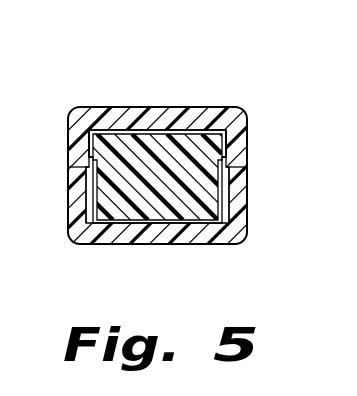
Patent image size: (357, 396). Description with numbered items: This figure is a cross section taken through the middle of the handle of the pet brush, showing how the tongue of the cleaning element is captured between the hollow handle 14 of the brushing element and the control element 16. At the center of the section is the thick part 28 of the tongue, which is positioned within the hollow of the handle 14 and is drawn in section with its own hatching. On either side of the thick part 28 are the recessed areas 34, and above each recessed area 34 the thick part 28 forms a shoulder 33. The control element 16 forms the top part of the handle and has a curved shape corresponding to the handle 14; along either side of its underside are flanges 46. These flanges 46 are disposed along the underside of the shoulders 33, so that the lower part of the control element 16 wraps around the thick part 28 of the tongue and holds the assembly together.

The handle 14 is at (243, 228).
The control element 16 is at (174, 107).
The thick part 28 is at (141, 160).
The shoulders 33 is at (100, 170).
The recessed areas 34 is at (212, 224).
The flanges 46 is at (92, 189).